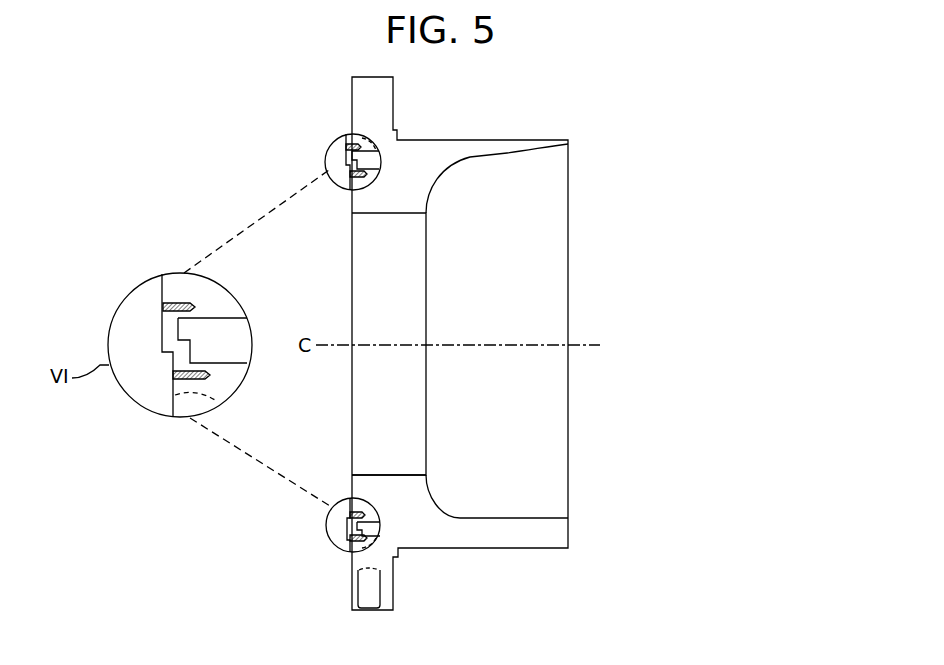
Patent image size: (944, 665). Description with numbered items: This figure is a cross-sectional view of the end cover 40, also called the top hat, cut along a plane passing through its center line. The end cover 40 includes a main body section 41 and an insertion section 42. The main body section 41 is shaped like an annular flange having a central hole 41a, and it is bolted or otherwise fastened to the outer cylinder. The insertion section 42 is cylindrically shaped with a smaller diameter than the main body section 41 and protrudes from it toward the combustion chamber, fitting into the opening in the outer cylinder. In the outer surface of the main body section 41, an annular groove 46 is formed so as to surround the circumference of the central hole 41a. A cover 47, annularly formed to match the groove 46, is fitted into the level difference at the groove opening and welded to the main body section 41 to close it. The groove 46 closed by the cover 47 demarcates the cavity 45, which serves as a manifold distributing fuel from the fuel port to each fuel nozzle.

The end cover 40 is at (341, 578).
The main body section 41 is at (352, 200).
The central hole 41a is at (375, 473).
The insertion section 42 is at (510, 140).
The cavity 45 is at (176, 330).
The groove 46 is at (220, 362).
The cover 47 is at (166, 306).